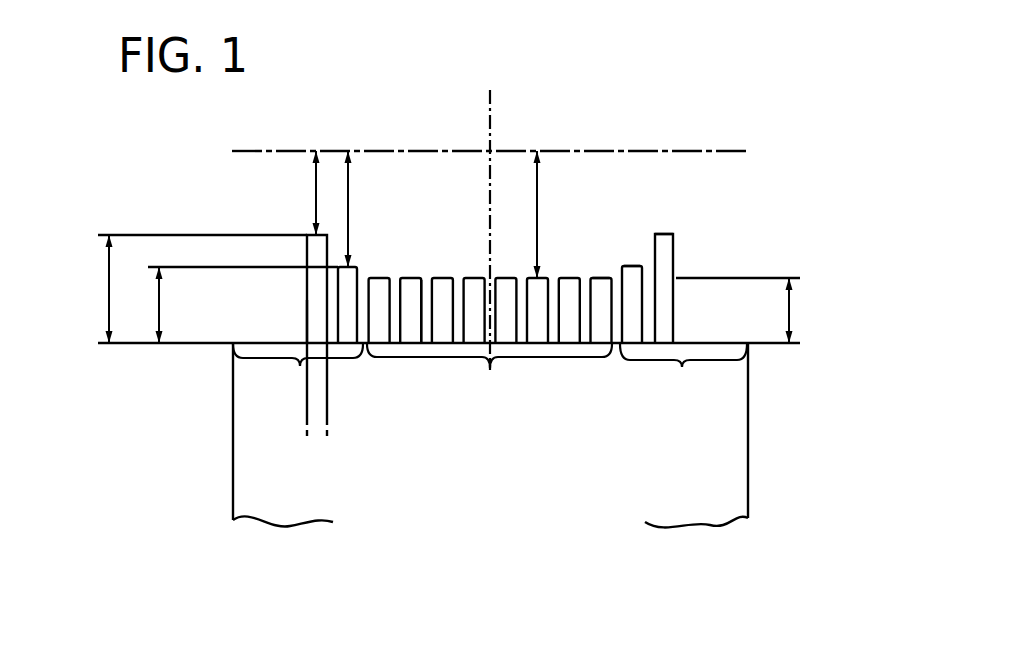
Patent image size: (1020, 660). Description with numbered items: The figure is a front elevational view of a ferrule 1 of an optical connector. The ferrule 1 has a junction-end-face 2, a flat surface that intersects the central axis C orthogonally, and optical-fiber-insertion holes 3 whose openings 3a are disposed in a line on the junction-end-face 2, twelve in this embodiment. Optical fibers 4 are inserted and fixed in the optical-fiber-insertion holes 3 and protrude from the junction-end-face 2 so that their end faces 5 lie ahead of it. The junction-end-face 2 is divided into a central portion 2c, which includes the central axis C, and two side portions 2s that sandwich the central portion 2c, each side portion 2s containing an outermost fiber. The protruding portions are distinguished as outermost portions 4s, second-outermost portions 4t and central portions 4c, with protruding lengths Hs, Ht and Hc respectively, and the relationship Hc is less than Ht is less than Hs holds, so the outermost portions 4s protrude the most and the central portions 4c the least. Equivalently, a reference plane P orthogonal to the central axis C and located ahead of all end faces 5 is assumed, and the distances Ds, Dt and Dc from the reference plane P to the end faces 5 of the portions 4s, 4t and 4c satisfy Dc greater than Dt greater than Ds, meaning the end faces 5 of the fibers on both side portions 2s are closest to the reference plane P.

The ferrule 1 is at (752, 446).
The junction-end-face 2 is at (428, 340).
The central portion 2c is at (489, 376).
The side portions 2s is at (300, 366).
The optical-fiber-insertion holes 3 is at (326, 386).
The openings 3a is at (313, 340).
The optical fibers 4 is at (480, 305).
The central protruding portions 4c is at (603, 337).
The second-outermost protruding portions 4t is at (358, 273).
The outermost protruding portions 4s is at (308, 252).
The end faces 5 is at (596, 277).
The reference plane P is at (700, 151).
The central axis C is at (492, 121).
The protruding length of outermost portions Hs is at (190, 289).
The protruding length of second-outermost portions Ht is at (230, 305).
The protruding length of central portions Hc is at (751, 310).
The distance between reference plane and outermost end face Ds is at (298, 193).
The distance between reference plane and second-outermost end face Dt is at (364, 209).
The distance between reference plane and central end face Dc is at (521, 214).